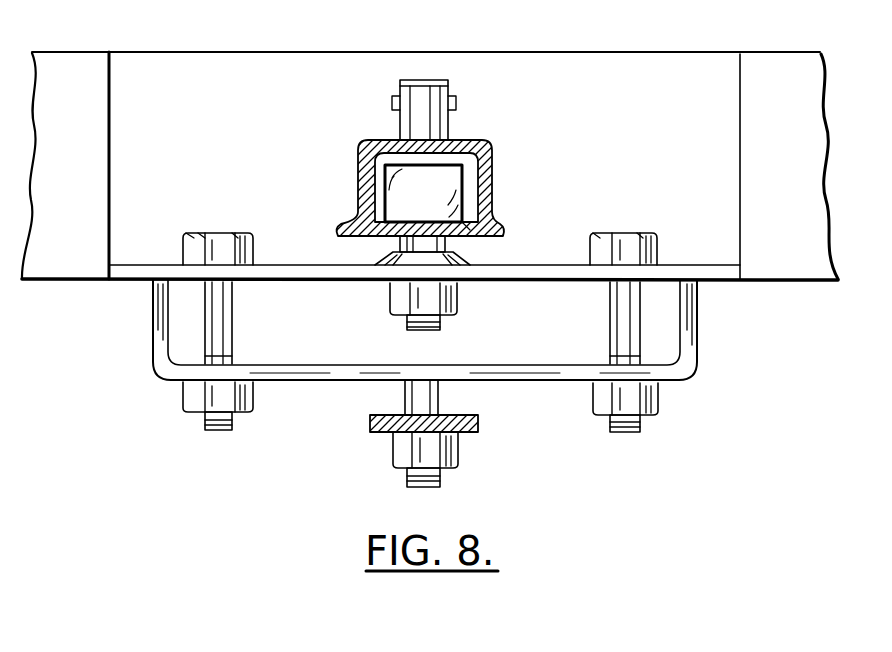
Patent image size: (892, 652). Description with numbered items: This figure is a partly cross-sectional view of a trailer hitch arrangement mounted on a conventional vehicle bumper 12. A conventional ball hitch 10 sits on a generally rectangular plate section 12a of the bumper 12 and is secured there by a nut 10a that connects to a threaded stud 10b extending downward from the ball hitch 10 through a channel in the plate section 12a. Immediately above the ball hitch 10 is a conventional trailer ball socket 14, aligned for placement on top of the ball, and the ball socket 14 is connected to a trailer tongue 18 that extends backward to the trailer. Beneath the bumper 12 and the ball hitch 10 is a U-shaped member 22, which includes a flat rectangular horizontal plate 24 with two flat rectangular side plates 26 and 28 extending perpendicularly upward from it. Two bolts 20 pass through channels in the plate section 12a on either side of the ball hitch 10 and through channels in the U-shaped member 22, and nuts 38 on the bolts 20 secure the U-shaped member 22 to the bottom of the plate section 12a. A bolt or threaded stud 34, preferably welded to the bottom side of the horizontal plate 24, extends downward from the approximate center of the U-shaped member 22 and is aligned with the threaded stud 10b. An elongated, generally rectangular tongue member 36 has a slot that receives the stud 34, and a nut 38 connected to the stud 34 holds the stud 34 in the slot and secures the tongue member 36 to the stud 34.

The ball hitch 10 is at (436, 200).
The nut 10a is at (457, 300).
The threaded stud 10b is at (407, 320).
The vehicle bumper 12 is at (286, 47).
The plate section 12a is at (133, 265).
The trailer ball socket 14 is at (492, 147).
The trailer tongue 18 is at (465, 228).
The bolts 20 is at (234, 326).
The U-shaped member 22 is at (313, 403).
The horizontal plate 24 is at (447, 366).
The side plate 26 is at (152, 313).
The side plate 28 is at (690, 337).
The threaded stud 34 is at (440, 395).
The tongue member 36 is at (491, 431).
The nuts 38 is at (188, 395).